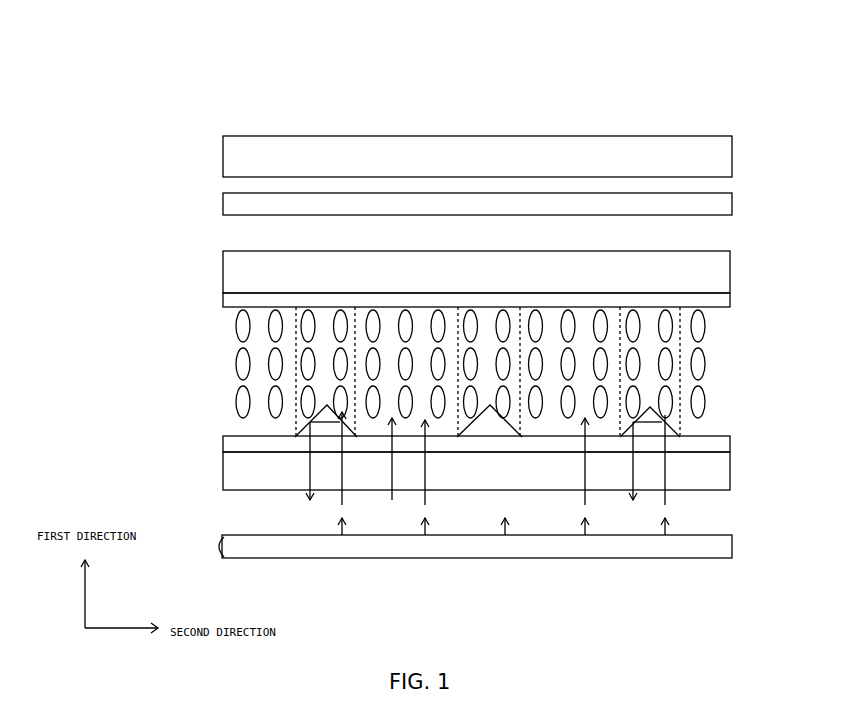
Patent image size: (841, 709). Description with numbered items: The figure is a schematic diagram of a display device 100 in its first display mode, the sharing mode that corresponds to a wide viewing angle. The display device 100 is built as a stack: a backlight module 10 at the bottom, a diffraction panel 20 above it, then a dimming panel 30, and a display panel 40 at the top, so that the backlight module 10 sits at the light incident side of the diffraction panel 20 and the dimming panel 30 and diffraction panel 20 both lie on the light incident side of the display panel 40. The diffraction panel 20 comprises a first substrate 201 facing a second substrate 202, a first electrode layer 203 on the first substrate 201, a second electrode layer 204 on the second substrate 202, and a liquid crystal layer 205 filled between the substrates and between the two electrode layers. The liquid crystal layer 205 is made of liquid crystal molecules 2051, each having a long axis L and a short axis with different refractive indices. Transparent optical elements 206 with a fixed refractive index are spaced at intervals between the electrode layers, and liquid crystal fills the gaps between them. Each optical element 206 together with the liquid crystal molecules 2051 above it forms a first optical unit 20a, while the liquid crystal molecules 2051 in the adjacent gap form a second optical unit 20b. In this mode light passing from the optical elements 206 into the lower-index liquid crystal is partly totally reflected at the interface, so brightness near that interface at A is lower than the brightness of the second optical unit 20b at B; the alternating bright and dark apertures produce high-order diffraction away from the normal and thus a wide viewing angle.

The display device 100 is at (466, 97).
The display panel 40 is at (223, 152).
The dimming panel 30 is at (223, 204).
The diffraction panel 20 is at (223, 253).
The second substrate 202 is at (718, 276).
The second electrode layer 204 is at (718, 299).
The liquid crystal layer 205 is at (706, 332).
The liquid crystal molecule 2051 is at (703, 316).
The long axis L is at (705, 331).
The optical element 206 is at (684, 437).
The first electrode layer 203 is at (718, 445).
The first substrate 201 is at (718, 475).
The backlight module 10 is at (218, 548).
The position at the interface in the first optical unit A is at (349, 416).
The position in the second optical unit B is at (392, 420).
The first optical unit 20a is at (520, 420).
The second optical unit 20b is at (448, 420).